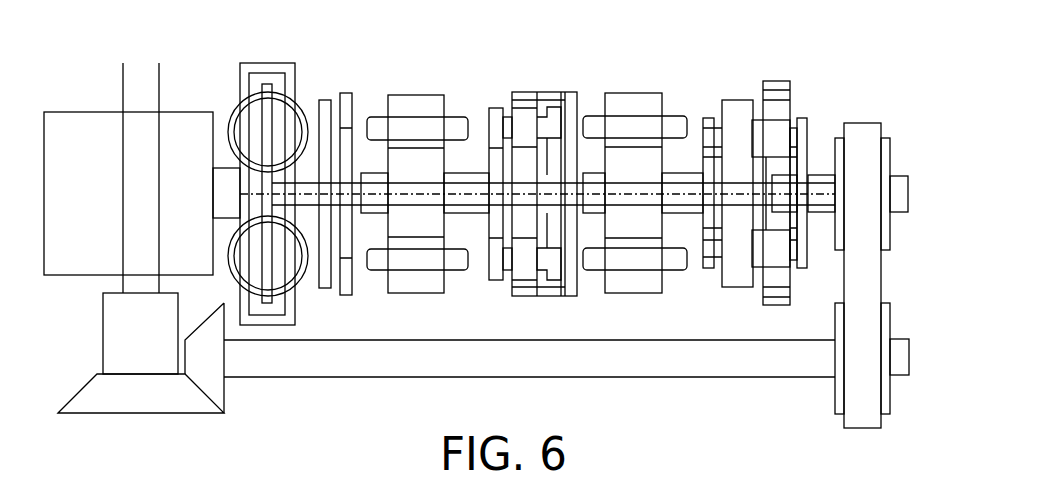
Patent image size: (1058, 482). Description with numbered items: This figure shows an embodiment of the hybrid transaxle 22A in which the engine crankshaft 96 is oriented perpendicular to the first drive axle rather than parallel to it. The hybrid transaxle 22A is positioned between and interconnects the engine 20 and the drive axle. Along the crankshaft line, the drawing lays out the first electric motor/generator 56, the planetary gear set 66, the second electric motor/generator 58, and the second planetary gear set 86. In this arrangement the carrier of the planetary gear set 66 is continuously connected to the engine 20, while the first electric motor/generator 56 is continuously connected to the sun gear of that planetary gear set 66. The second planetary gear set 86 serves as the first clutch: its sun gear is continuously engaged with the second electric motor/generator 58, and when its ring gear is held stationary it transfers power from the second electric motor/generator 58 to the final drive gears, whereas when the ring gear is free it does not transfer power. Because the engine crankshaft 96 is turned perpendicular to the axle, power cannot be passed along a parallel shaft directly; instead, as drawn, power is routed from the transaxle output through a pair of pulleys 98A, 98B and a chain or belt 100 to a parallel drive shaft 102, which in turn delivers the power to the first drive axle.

The engine 20 is at (101, 206).
The hybrid transaxle 22A is at (295, 393).
The first electric motor/generator 56 is at (420, 162).
The second electric motor/generator 58 is at (625, 160).
The planetary gear set 66 is at (532, 92).
The second planetary gear set 86 is at (775, 82).
The engine crankshaft 96 is at (231, 190).
The pulley 98A is at (888, 157).
The pulley 98B is at (888, 392).
The chain or belt 100 is at (865, 272).
The parallel drive shaft 102 is at (560, 358).